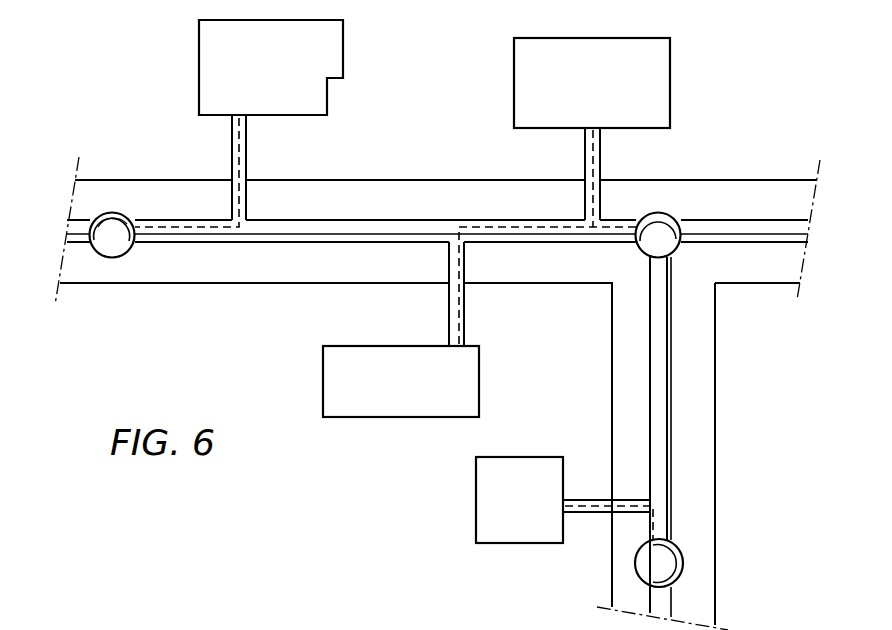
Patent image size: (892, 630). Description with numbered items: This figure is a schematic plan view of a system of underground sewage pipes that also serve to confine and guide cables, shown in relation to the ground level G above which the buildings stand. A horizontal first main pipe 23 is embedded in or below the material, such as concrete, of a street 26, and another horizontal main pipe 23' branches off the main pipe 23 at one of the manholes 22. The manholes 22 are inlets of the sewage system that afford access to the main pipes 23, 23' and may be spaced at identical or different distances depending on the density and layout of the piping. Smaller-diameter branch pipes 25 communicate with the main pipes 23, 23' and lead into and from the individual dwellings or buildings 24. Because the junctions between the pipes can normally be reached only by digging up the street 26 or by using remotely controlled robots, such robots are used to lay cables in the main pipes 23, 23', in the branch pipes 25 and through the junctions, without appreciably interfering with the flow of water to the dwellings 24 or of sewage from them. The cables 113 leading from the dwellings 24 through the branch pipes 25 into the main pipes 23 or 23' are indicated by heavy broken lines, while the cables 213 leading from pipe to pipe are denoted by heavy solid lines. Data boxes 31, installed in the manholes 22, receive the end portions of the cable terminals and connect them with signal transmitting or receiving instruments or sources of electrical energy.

The manhole 22 is at (118, 248).
The first main pipe 23 is at (437, 270).
The main pipe 23' is at (615, 435).
The dwelling 24 is at (248, 80).
The branch pipe 25 is at (247, 147).
The street 26 is at (290, 266).
The data box 31 is at (115, 212).
The cable 113 is at (232, 144).
The cable 213 is at (672, 363).
The ground level G is at (398, 176).